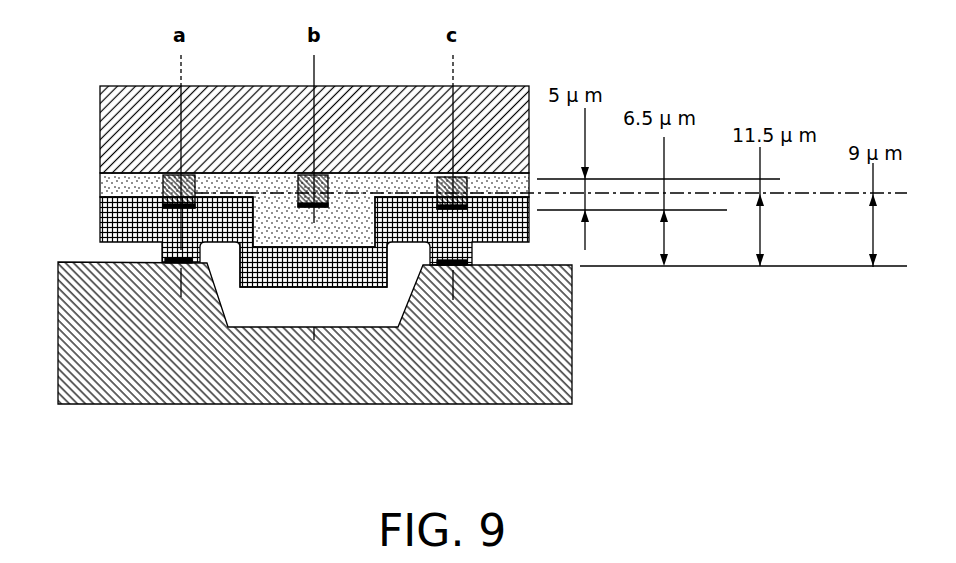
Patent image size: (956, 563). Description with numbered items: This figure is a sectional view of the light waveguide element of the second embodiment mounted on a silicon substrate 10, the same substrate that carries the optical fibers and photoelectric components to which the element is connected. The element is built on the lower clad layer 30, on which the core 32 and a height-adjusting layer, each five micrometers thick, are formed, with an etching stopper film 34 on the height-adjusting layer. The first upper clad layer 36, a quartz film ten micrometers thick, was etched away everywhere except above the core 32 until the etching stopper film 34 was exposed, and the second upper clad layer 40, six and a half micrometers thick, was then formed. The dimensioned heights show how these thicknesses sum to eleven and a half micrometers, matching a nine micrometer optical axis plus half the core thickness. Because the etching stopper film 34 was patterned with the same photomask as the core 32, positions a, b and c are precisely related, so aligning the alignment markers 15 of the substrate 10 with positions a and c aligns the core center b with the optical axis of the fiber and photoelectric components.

The substrate base 10 is at (65, 400).
The alignment marker 15 is at (165, 262).
The lower clad layer 30 is at (100, 133).
The core 32 is at (302, 210).
The etching stopper film 34 is at (145, 210).
The first upper clad layer 36 is at (267, 232).
The second upper clad layer 40 is at (337, 283).